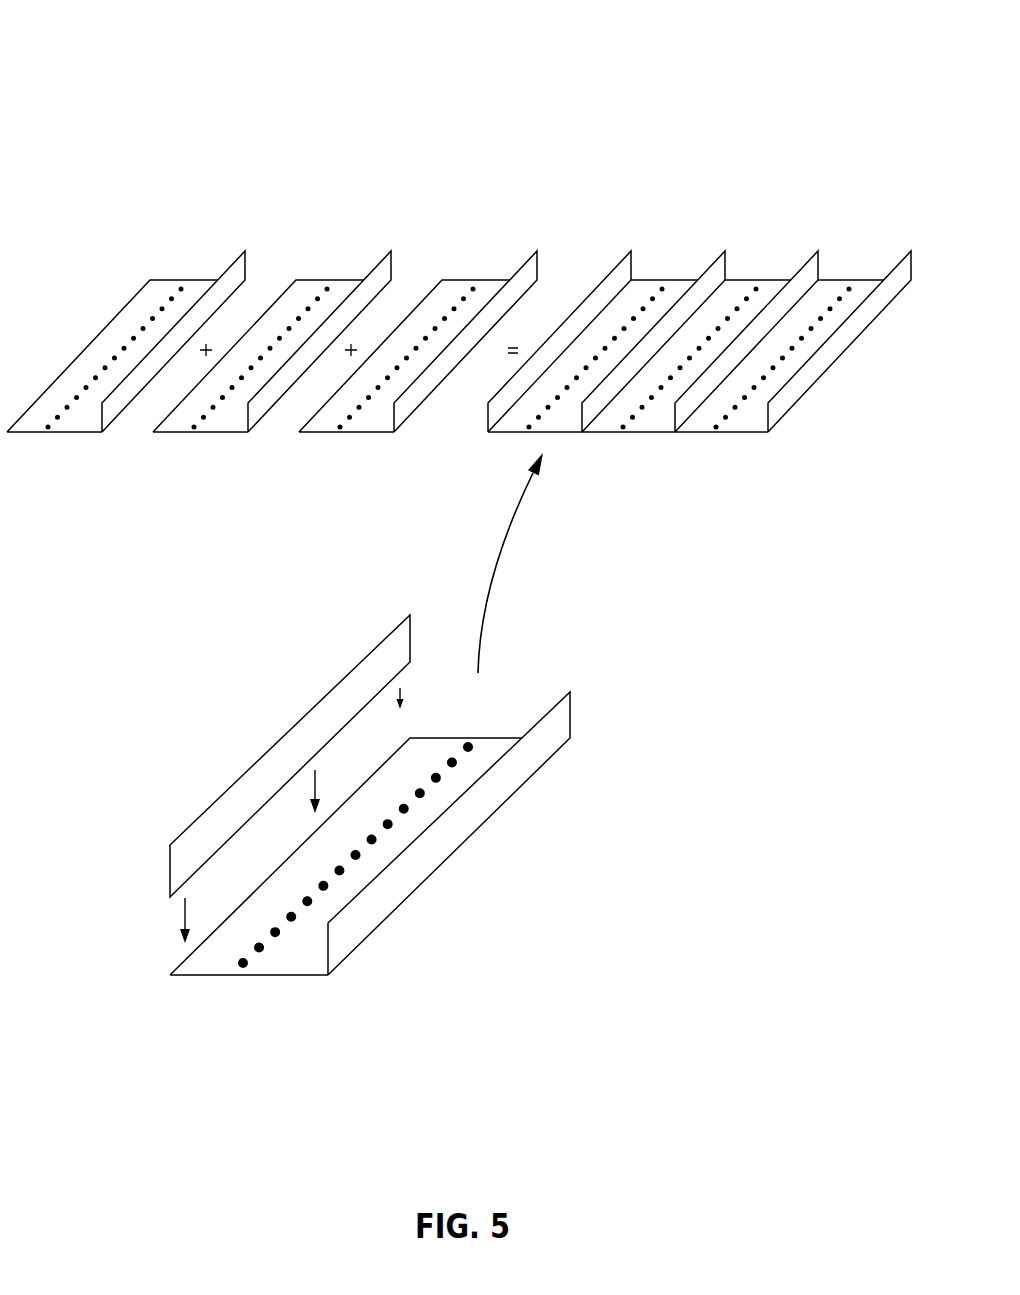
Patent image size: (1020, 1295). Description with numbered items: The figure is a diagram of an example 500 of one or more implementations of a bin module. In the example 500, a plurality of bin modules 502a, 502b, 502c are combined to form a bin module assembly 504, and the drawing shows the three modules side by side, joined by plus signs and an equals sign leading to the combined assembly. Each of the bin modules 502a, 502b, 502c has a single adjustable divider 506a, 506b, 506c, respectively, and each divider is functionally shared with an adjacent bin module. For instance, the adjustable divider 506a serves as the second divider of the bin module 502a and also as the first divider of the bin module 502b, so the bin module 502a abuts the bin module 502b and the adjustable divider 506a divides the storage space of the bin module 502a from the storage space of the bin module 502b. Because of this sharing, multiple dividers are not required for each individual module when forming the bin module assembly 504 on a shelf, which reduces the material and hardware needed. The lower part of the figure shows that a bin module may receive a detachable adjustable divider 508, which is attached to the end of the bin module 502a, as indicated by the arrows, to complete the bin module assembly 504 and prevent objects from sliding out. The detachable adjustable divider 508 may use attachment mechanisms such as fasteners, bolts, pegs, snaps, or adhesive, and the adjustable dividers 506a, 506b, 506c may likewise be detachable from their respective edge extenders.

The example 500 is at (128, 32).
The bin module 502a is at (53, 432).
The bin module 502b is at (199, 432).
The bin module 502c is at (345, 432).
The bin module assembly 504 is at (922, 222).
The adjustable divider 506a is at (241, 268).
The adjustable divider 506b is at (387, 268).
The adjustable divider 506c is at (533, 268).
The detachable adjustable divider 508 is at (215, 800).